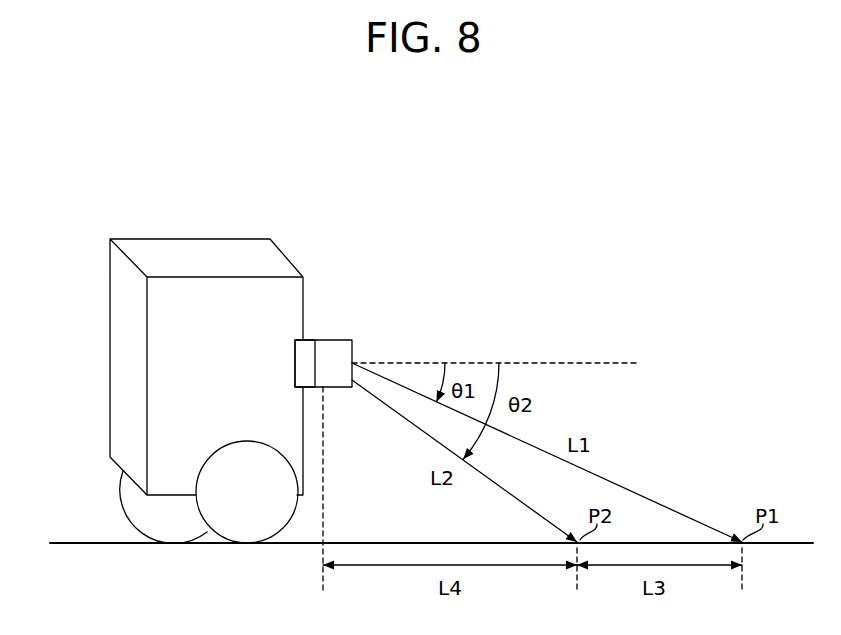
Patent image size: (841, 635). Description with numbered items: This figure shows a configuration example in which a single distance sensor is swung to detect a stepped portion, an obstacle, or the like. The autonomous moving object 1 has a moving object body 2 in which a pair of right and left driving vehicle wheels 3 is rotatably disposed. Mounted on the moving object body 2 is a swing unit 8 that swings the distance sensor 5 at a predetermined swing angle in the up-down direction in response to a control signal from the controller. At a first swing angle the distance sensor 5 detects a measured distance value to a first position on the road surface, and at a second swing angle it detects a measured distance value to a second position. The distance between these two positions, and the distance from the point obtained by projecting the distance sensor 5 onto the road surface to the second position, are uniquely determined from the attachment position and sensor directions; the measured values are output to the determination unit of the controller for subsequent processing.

The autonomous moving object 1 is at (60, 228).
The moving object body 2 is at (117, 368).
The driving vehicle wheel 3 is at (162, 532).
The distance sensor 5 is at (330, 347).
The swing unit 8 is at (307, 338).